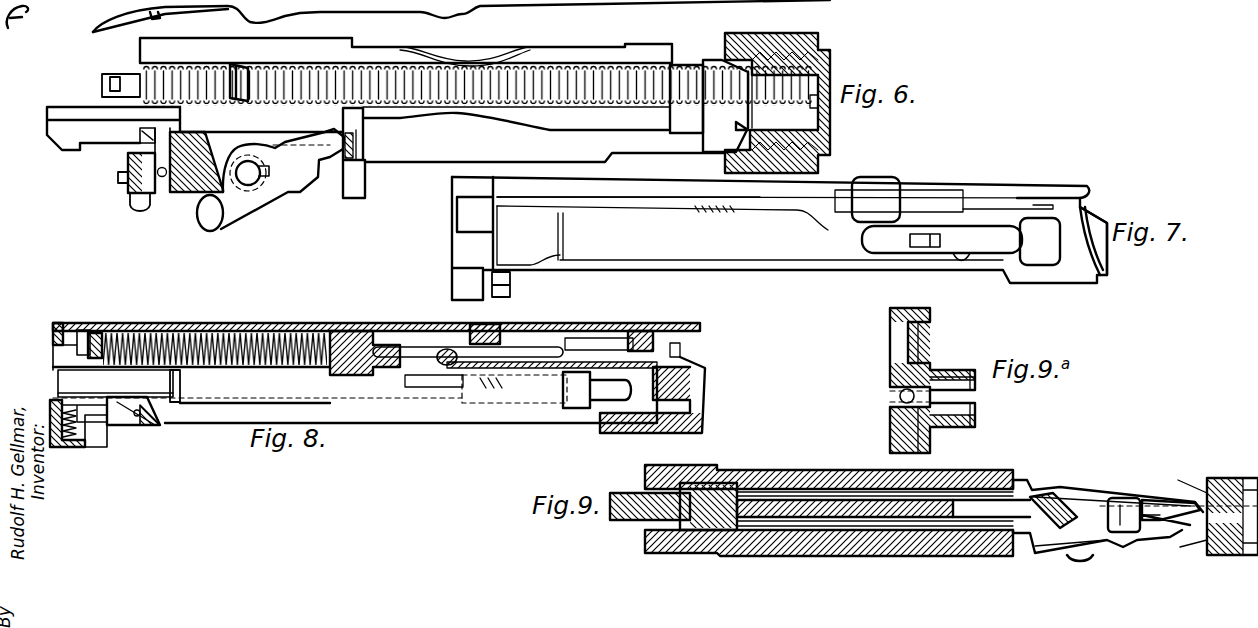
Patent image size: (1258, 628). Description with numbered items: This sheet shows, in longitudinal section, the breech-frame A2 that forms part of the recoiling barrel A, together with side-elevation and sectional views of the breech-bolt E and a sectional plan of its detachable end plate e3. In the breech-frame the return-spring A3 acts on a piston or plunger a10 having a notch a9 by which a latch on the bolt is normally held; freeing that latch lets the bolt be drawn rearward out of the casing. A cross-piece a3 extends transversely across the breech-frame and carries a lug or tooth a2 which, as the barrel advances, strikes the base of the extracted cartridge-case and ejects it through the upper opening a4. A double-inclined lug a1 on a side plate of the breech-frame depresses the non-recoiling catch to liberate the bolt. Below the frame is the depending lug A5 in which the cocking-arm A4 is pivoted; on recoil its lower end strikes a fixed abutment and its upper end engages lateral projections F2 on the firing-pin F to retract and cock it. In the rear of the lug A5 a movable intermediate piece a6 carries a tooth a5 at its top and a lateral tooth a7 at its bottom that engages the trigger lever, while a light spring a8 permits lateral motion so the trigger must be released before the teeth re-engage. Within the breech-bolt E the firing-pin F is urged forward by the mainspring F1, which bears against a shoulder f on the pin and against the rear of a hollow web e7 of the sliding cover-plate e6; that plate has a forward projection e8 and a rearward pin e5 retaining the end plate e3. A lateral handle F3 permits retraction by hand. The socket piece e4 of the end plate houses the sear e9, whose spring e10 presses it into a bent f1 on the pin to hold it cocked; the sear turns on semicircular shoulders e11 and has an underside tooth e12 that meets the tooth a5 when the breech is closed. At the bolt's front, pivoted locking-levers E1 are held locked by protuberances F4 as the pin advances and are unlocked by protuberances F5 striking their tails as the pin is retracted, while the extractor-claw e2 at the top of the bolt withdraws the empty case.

In FIG. 6, the receiver / barrel socket A is at (790, 50).
In FIG. 6, the breech block body A2 is at (544, 134).
In FIG. 6, the return-spring A3 is at (406, 47).
In FIG. 6, the cocking-arm A4 is at (250, 206).
In FIG. 6, the depending lug A5 is at (204, 162).
In FIG. 6, the double-inclined lug a1 is at (195, 128).
In FIG. 6, the lug or tooth a2 is at (356, 122).
In FIG. 6, the cross-piece a3 is at (368, 164).
In FIG. 6, the upper opening a4 is at (477, 44).
In FIG. 6, the tooth a5 is at (148, 135).
In FIG. 6, the intermediate piece a6 is at (136, 166).
In FIG. 6, the lateral tooth a7 is at (133, 208).
In FIG. 6, the light spring a8 is at (163, 177).
In FIG. 6, the notch a9 is at (112, 80).
In FIG. 6, the piston or plunger a10 is at (822, 72).
In FIG. 7, the bolt body E is at (779, 230).
In FIG. 8, the bolt body E is at (446, 349).
In FIG. 9, the bolt body E is at (948, 466).
In FIG. 9, the locking-levers E1 is at (1150, 500).
In FIG. 7, the extractor-claw e2 is at (1088, 212).
In FIG. 8, the extractor-claw e2 is at (700, 360).
In FIG. 7, the end plate e3 is at (456, 238).
In FIG. 8, the end plate e3 is at (82, 394).
In FIG. 9A, the end plate e3 is at (890, 420).
In FIG. 9A, the socket piece e4 is at (942, 378).
In FIG. 8, the pin e5 is at (166, 333).
In FIG. 7, the cover-plate e6 is at (528, 222).
In FIG. 8, the cover-plate e6 is at (185, 333).
In FIG. 7, the hollow web e7 is at (632, 205).
In FIG. 8, the hollow web e7 is at (95, 330).
In FIG. 8, the projection e8 is at (642, 334).
In FIG. 8, the sear e9 is at (100, 405).
In FIG. 8, the spring e10 is at (70, 448).
In FIG. 8, the semicircular shoulders e11 is at (157, 418).
In FIG. 7, the tooth e12 is at (509, 287).
In FIG. 8, the tooth e12 is at (100, 448).
In FIG. 9, the tooth e12 is at (652, 482).
In FIG. 8, the firing-pin F is at (447, 402).
In FIG. 9, the firing-pin F is at (952, 517).
In FIG. 7, the mainspring F1 is at (961, 241).
In FIG. 8, the mainspring F1 is at (218, 333).
In FIG. 8, the lateral projections F2 is at (181, 382).
In FIG. 9, the lateral projections F2 is at (668, 532).
In FIG. 7, the lateral handle F3 is at (876, 199).
In FIG. 8, the lateral handle F3 is at (497, 331).
In FIG. 8, the protuberances F4 is at (586, 396).
In FIG. 9, the protuberances F4 is at (1135, 500).
In FIG. 9, the lateral protuberances F5 is at (1045, 493).
In FIG. 8, the shoulder f is at (328, 330).
In FIG. 8, the bent f1 is at (68, 398).